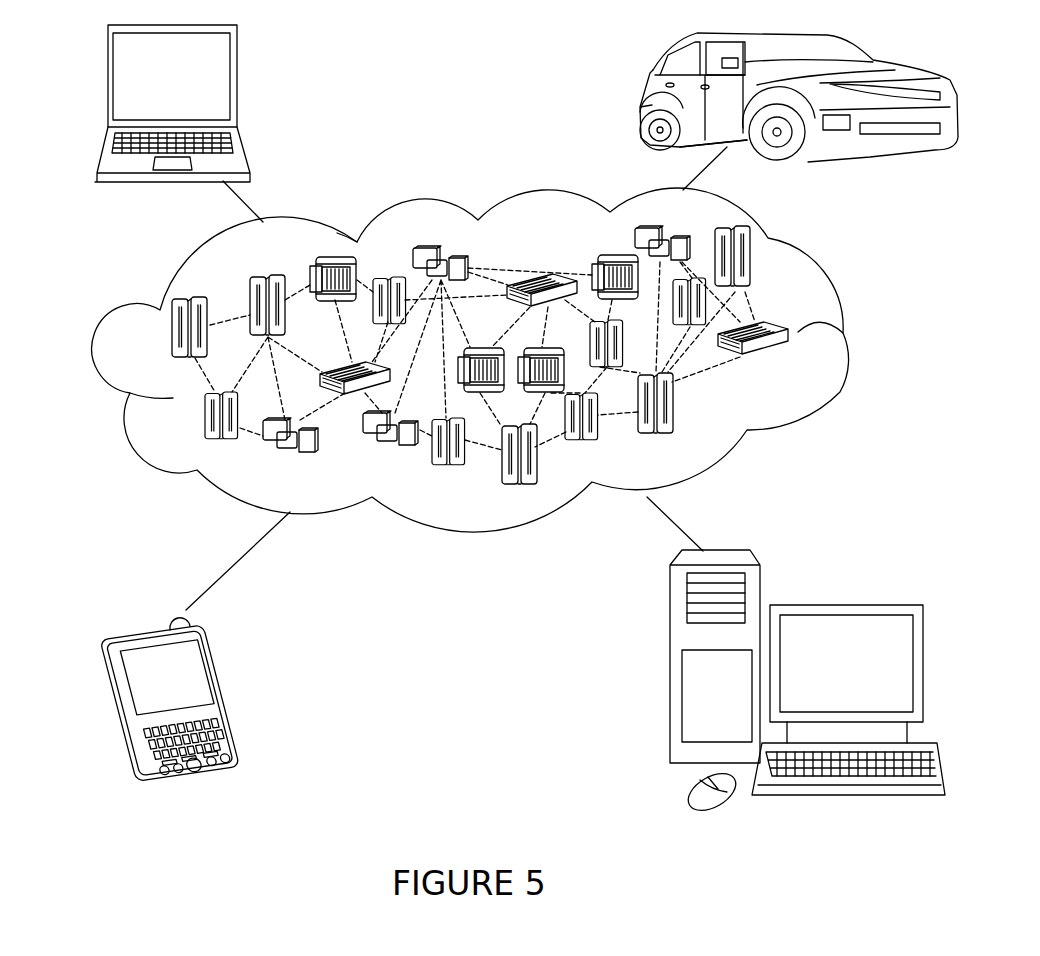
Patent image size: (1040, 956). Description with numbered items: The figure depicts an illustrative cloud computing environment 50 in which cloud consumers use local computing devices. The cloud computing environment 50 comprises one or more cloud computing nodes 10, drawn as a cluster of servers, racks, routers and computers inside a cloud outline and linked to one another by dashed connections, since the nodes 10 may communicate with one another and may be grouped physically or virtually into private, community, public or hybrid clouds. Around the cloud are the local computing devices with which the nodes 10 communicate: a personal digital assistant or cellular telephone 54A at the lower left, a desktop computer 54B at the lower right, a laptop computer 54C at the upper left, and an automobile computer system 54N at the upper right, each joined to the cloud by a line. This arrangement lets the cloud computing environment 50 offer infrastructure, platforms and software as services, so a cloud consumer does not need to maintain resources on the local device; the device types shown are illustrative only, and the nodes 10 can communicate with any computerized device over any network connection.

The personal digital assistant (PDA) or cellular telephone 54A is at (227, 693).
The desktop computer 54B is at (843, 602).
The laptop computer 54C is at (240, 85).
The automobile computer system 54N is at (641, 98).
The cloud computing environment 50 is at (494, 360).
The cloud computing node 10 is at (797, 368).